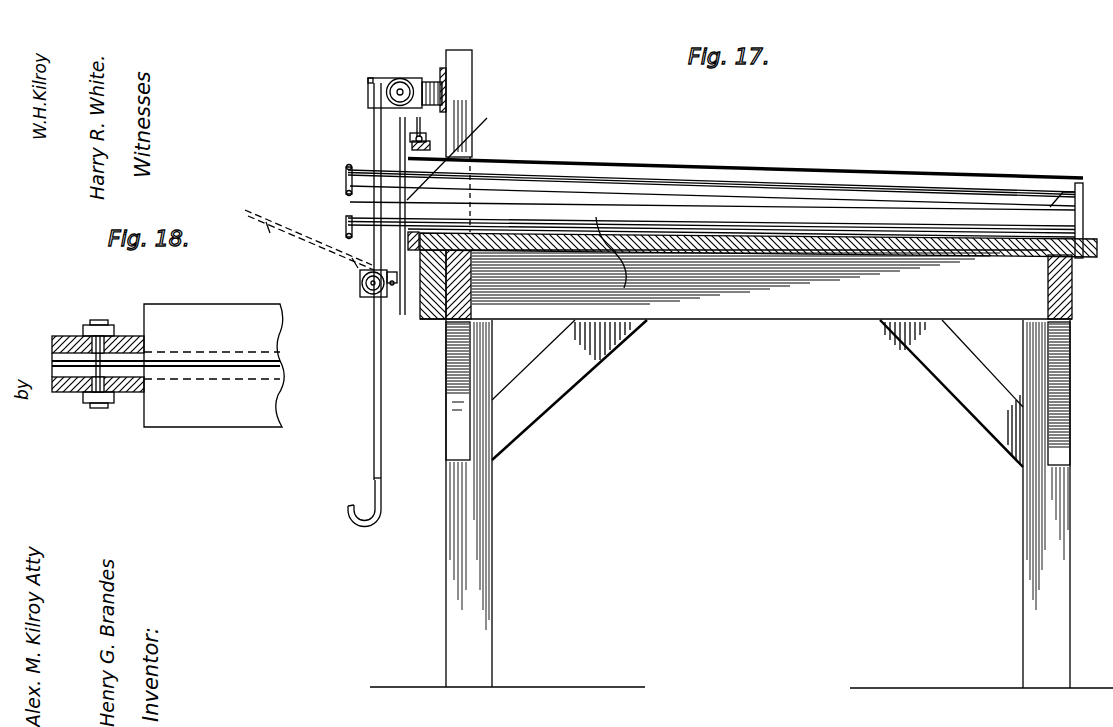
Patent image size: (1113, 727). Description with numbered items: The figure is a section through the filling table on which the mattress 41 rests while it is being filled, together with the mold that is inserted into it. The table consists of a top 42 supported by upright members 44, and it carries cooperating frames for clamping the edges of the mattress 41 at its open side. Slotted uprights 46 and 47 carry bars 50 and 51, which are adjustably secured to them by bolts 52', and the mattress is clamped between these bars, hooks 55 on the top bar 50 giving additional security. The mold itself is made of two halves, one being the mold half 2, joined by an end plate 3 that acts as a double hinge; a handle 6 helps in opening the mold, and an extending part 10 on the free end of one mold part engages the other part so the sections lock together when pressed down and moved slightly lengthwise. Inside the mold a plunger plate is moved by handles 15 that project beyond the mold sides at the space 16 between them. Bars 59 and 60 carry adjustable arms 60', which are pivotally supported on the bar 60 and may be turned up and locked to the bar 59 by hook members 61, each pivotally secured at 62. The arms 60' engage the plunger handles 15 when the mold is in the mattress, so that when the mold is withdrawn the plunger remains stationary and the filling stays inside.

In FIG. 17, the mold half 2 is at (565, 168).
In FIG. 17, the end plate 3 is at (348, 213).
In FIG. 17, the handle 6 is at (346, 190).
In FIG. 17, the extending part 10 is at (1078, 185).
In FIG. 17, the handle 15 is at (460, 151).
In FIG. 17, the space 16 is at (653, 196).
In FIG. 17, the mattress 41 is at (748, 178).
In FIG. 17, the table top 42 is at (757, 240).
In FIG. 17, the upright member 44 is at (472, 80).
In FIG. 18, the upright 46 is at (72, 338).
In FIG. 18, the upright 47 is at (72, 392).
In FIG. 17, the bar 50 is at (412, 134).
In FIG. 18, the bar 50 is at (52, 345).
In FIG. 17, the bar 51 is at (412, 145).
In FIG. 18, the bar 51 is at (58, 372).
In FIG. 18, the bolt 52' is at (118, 345).
In FIG. 17, the hook 55 is at (423, 137).
In FIG. 17, the bar 59 is at (402, 80).
In FIG. 17, the bar 60 is at (360, 303).
In FIG. 17, the adjustable arm 60' is at (397, 281).
In FIG. 17, the hook member 61 is at (363, 515).
In FIG. 17, the pivot 62 is at (383, 482).